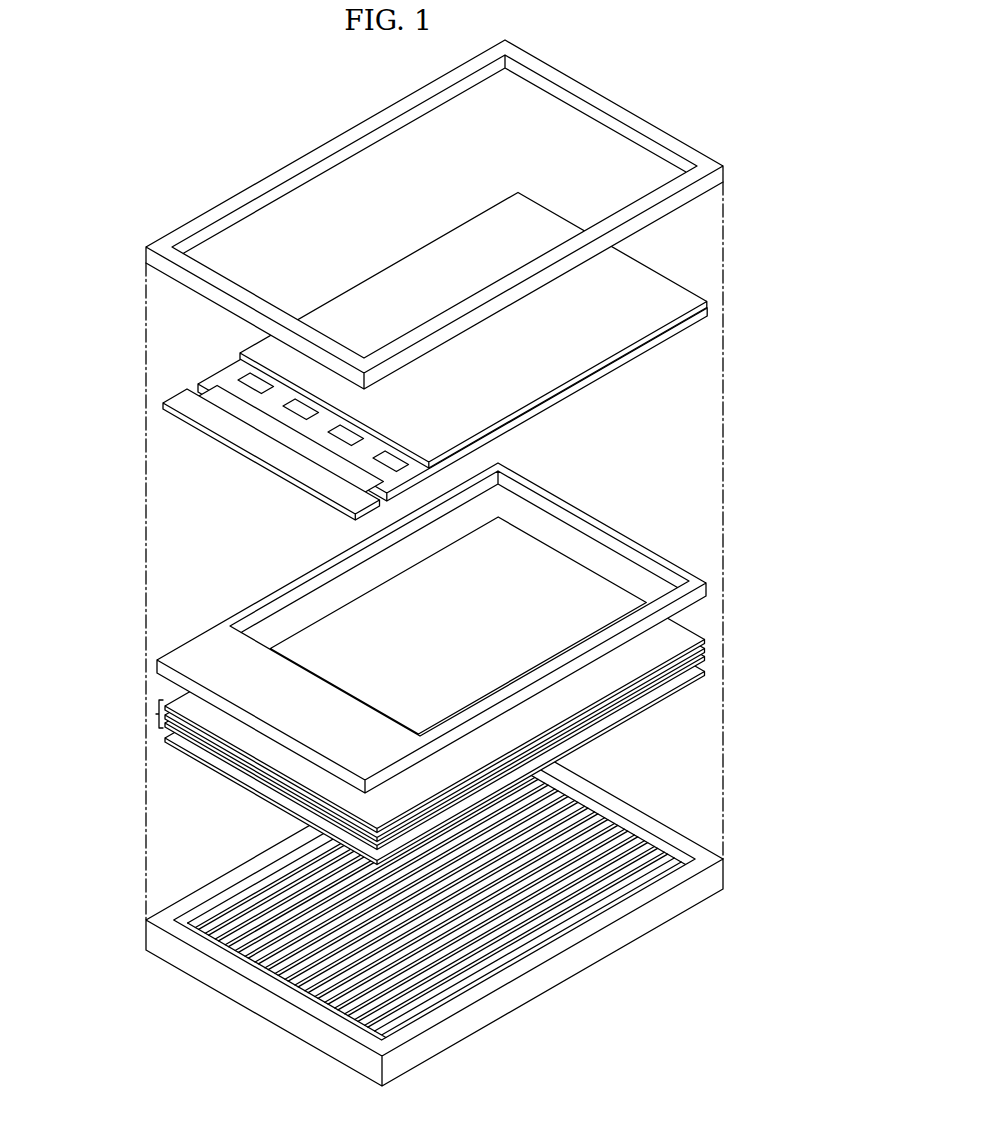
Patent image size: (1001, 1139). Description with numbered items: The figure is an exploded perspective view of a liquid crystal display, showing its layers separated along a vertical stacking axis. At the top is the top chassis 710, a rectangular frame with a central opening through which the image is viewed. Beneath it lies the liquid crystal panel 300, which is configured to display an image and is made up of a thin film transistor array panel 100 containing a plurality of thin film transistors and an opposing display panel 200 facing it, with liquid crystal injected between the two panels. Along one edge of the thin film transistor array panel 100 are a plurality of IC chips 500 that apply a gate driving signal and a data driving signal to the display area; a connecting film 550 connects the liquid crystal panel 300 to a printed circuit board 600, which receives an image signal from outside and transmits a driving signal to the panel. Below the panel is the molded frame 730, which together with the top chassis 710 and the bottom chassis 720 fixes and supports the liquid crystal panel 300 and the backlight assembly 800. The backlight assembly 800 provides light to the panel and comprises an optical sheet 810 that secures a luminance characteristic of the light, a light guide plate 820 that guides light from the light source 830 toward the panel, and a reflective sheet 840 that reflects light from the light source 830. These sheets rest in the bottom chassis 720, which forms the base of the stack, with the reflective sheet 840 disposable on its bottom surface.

The thin film transistor array panel 100 is at (225, 373).
The opposing display panel 200 is at (268, 350).
The liquid crystal panel 300 is at (367, 347).
The IC chips 500 is at (294, 410).
The connecting film 550 is at (232, 413).
The printed circuit board 600 is at (333, 492).
The top chassis 710 is at (222, 210).
The bottom chassis 720 is at (150, 935).
The molded frame 730 is at (198, 640).
The backlight assembly 800 is at (368, 709).
The optical sheet 810 is at (156, 713).
The light guide plate 820 is at (193, 748).
The light source 830 is at (320, 870).
The reflective sheet 840 is at (307, 902).